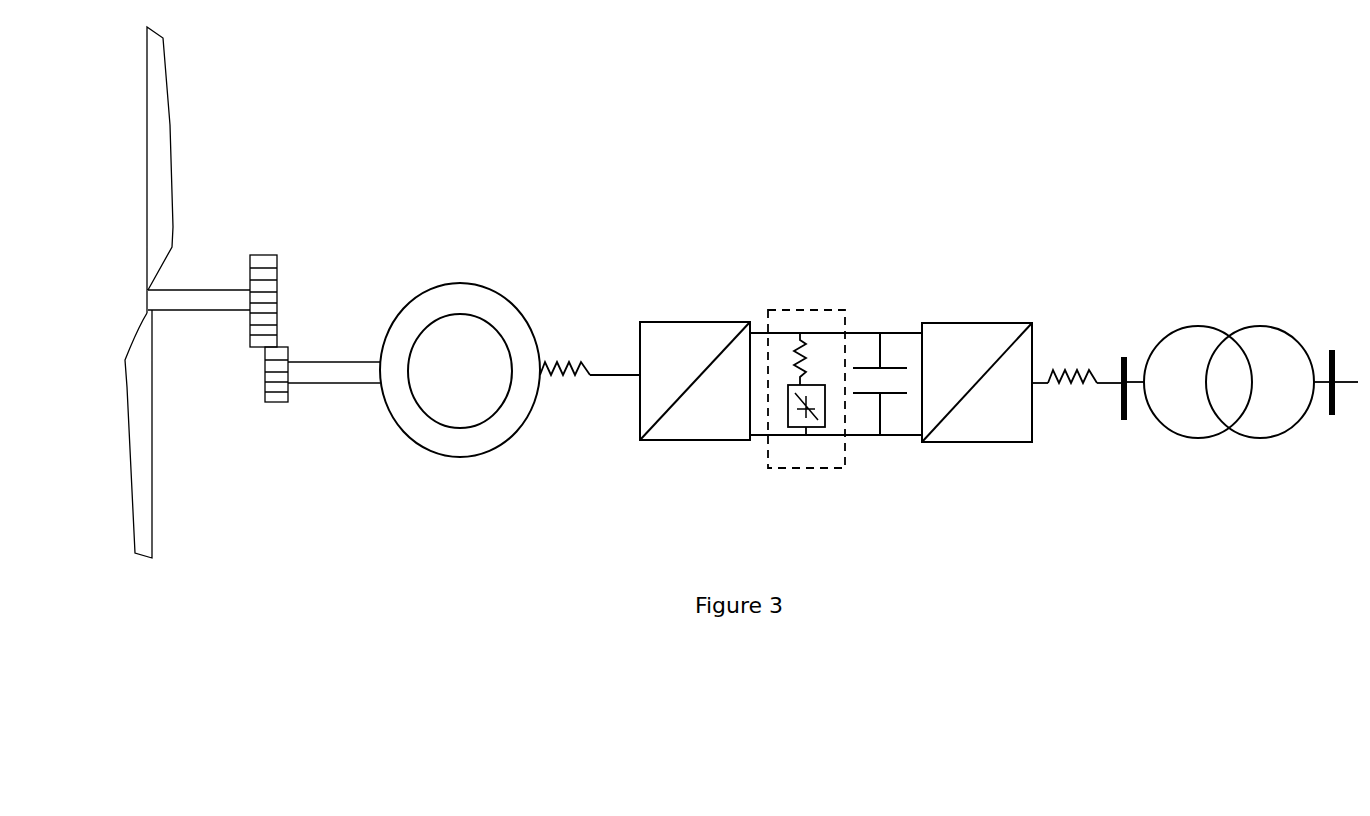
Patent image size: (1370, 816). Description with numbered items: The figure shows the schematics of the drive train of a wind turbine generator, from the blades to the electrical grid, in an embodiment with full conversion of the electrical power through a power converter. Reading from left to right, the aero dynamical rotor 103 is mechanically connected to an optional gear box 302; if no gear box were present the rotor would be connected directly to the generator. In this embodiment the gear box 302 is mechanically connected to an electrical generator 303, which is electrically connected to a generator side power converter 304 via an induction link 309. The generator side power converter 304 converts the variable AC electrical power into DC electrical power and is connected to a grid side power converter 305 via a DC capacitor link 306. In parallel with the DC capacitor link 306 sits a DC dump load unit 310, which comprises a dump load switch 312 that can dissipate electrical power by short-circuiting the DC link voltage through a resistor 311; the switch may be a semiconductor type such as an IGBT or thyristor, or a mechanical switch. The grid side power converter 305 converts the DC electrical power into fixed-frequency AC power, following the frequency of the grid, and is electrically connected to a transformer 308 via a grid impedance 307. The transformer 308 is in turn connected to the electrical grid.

The aero dynamical rotor 103 is at (175, 127).
The gear box 302 is at (292, 302).
The electrical generator 303 is at (500, 280).
The generator side power converter 304 is at (695, 307).
The grid side power converter 305 is at (982, 312).
The DC capacitor link 306 is at (893, 397).
The grid impedance 307 is at (1073, 387).
The transformer 308 is at (1222, 313).
The induction link 309 is at (562, 395).
The DC dump load unit 310 is at (791, 402).
The resistor 311 is at (807, 350).
The dump load switch 312 is at (823, 427).